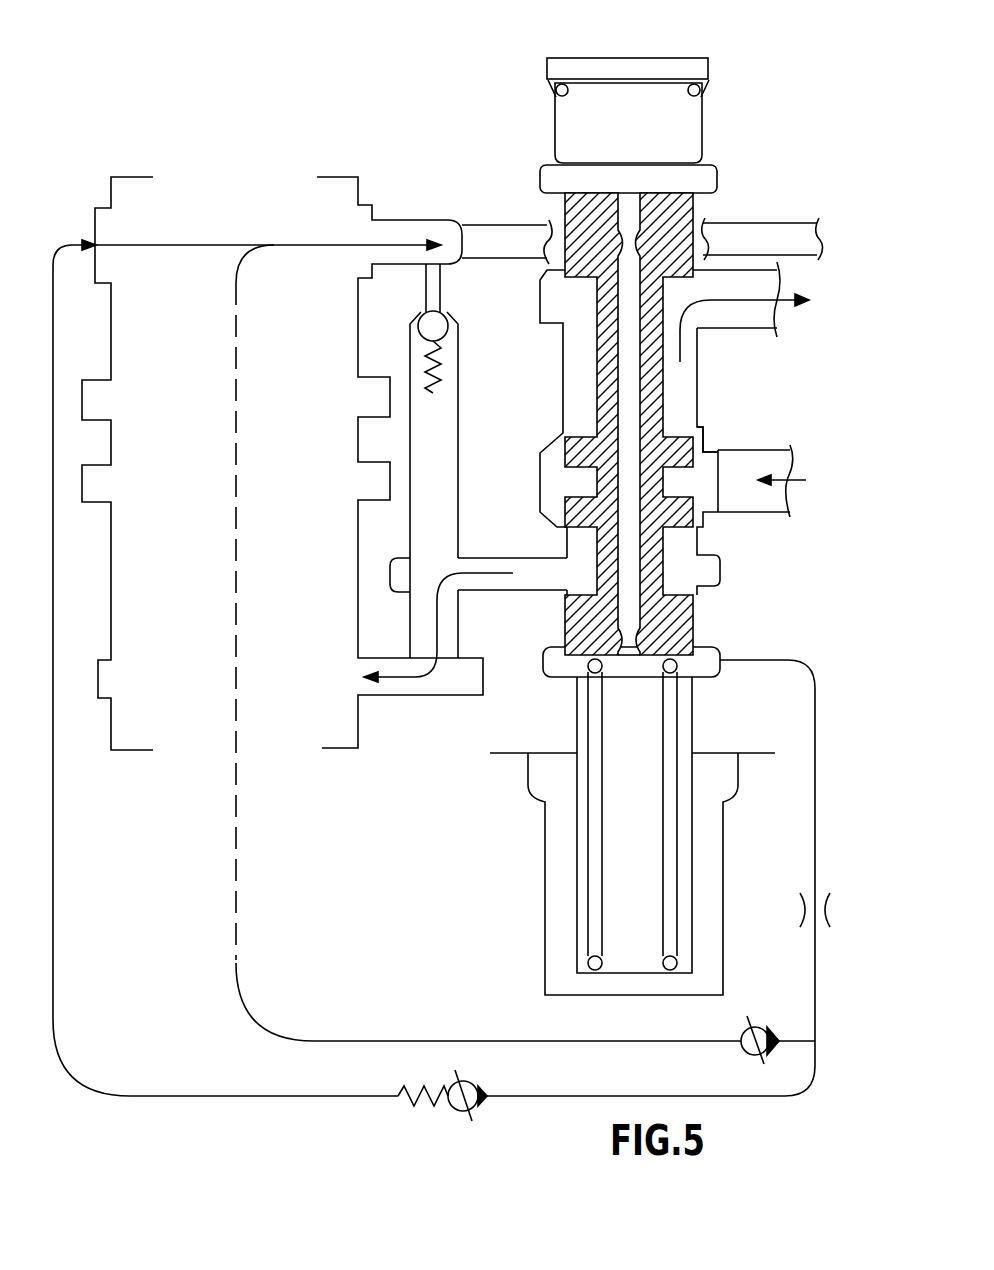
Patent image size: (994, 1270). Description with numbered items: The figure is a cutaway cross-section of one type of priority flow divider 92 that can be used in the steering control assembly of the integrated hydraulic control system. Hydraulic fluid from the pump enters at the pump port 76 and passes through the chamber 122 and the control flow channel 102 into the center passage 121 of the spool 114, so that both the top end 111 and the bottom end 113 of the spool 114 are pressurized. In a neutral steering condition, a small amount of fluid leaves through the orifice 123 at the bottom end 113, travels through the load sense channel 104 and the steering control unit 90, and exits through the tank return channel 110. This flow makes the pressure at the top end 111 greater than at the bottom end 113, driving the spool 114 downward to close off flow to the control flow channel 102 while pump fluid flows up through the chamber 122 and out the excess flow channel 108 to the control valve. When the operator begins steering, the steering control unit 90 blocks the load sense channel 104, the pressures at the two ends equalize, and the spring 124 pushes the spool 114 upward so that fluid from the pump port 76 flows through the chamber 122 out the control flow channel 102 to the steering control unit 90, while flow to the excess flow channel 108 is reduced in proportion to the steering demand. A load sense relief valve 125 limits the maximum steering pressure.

The steering control unit 90 is at (110, 192).
The priority flow divider 92 is at (804, 68).
The control flow channel 102 is at (498, 558).
The load sense channel 104 is at (796, 658).
The excess flow channel 108 is at (745, 343).
The tank return channel 110 is at (795, 223).
The top end of spool 111 is at (560, 130).
The bottom end of spool 113 is at (577, 723).
The spool 114 is at (597, 355).
The center passage 121 is at (630, 393).
The chamber 122 is at (713, 448).
The orifice 123 is at (633, 656).
The spring 124 is at (692, 723).
The load sense relief valve 125 is at (474, 1078).
The pump port 76 is at (760, 514).